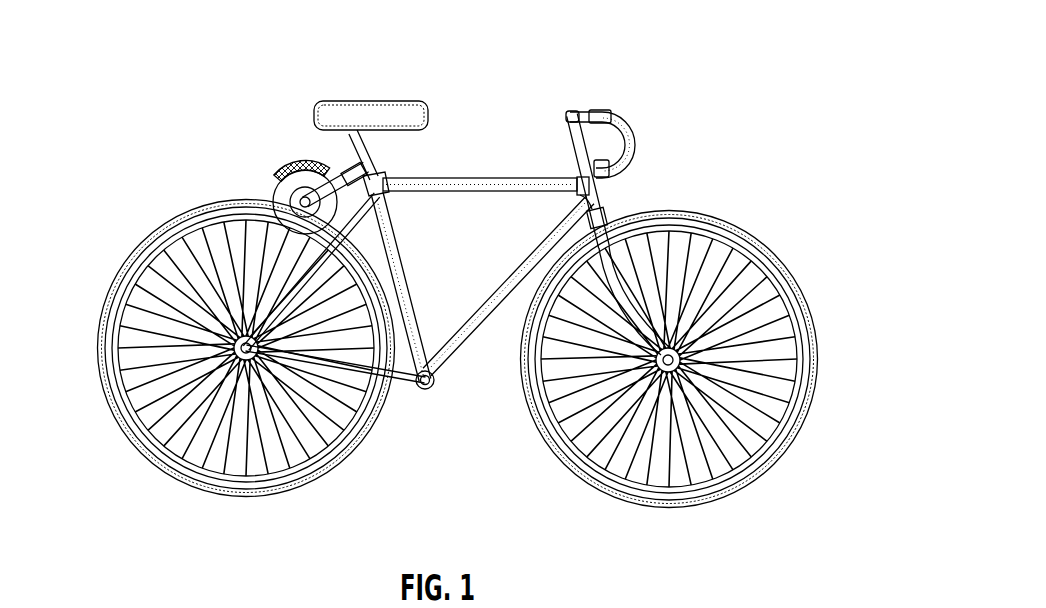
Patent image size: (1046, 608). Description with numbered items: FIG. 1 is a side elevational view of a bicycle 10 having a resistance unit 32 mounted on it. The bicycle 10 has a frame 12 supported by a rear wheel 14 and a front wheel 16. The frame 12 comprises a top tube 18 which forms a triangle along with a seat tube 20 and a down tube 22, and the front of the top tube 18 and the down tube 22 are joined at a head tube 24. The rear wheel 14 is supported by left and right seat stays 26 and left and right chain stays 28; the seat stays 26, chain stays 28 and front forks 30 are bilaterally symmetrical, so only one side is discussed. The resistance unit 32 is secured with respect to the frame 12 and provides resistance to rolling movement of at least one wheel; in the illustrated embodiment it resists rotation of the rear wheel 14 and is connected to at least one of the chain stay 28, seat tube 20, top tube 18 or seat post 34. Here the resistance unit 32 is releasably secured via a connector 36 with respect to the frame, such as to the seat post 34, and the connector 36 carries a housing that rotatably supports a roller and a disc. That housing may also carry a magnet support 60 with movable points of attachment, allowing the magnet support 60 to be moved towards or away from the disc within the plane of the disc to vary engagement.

The bicycle 10 is at (448, 259).
The frame 12 is at (353, 268).
The rear wheel 14 is at (98, 297).
The front wheel 16 is at (806, 266).
The top tube 18 is at (524, 191).
The seat tube 20 is at (402, 287).
The down tube 22 is at (456, 357).
The head tube 24 is at (606, 189).
The seat stays 26 is at (302, 280).
The chain stays 28 is at (362, 372).
The front forks 30 is at (615, 283).
The resistance unit 32 is at (284, 141).
The seat post 34 is at (368, 136).
The connector 36 is at (375, 168).
The magnet support 60 is at (302, 160).